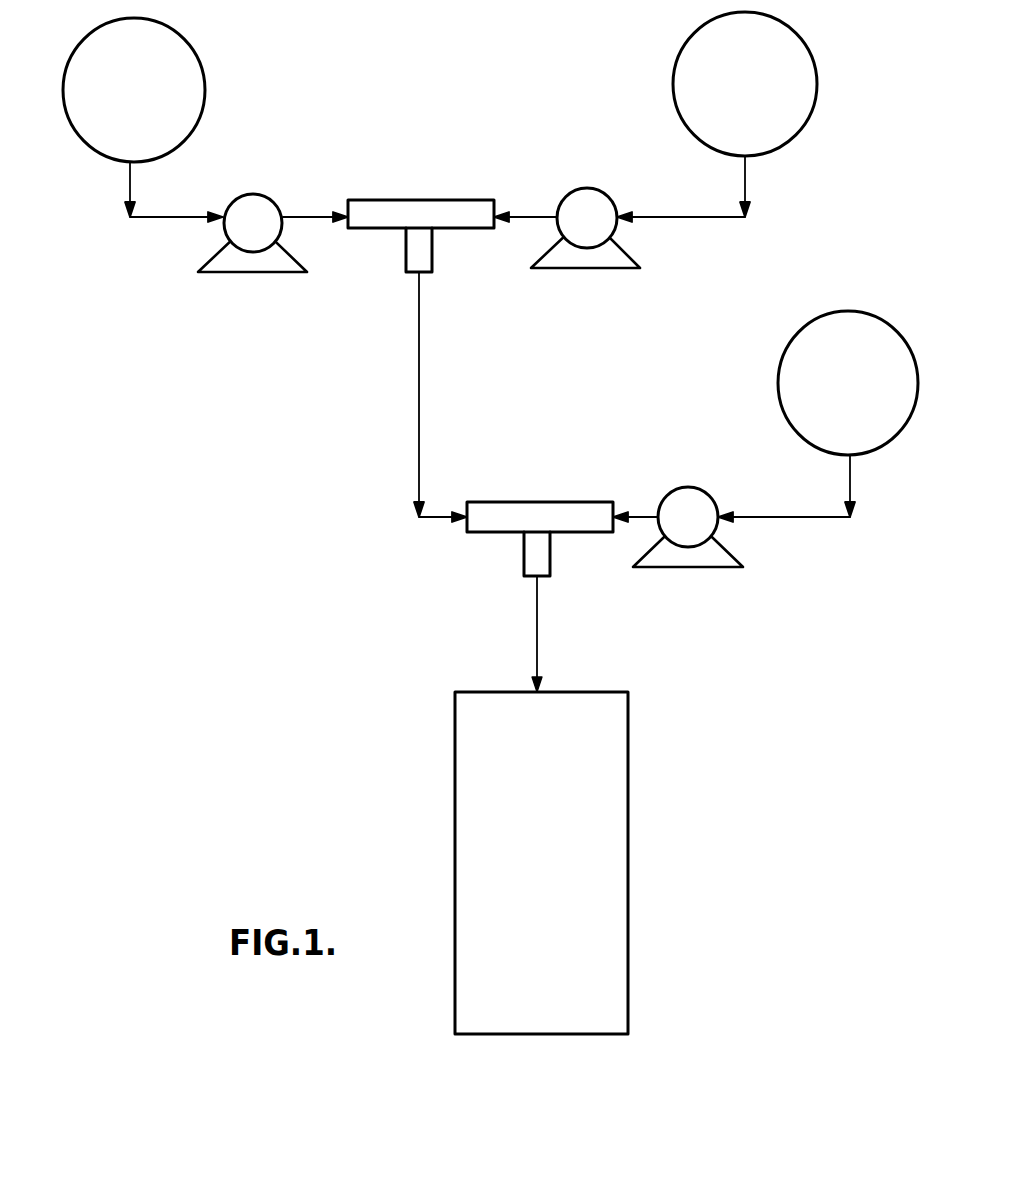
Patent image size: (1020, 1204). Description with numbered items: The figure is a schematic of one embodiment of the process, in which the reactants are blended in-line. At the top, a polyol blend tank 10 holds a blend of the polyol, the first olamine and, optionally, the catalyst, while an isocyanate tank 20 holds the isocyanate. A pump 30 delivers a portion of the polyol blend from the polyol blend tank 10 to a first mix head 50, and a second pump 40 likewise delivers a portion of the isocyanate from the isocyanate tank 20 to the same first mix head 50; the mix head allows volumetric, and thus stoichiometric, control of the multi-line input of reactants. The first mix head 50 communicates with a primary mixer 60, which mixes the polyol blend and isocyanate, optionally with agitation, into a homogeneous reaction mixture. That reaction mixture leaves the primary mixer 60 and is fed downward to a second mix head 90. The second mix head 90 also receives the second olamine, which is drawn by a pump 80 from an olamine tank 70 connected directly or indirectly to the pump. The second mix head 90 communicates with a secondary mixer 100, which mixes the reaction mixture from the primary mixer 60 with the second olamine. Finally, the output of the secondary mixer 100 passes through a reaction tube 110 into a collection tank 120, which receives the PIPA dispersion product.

The polyol blend tank 10 is at (198, 72).
The isocyanate tank 20 is at (672, 80).
The pump 30 is at (258, 195).
The pump 40 is at (590, 191).
The first mix head 50 is at (385, 200).
The primary mixer 60 is at (406, 245).
The olamine tank 70 is at (778, 366).
The pump 80 is at (682, 491).
The second mix head 90 is at (517, 502).
The secondary mixer 100 is at (524, 555).
The reaction tube 110 is at (538, 642).
The collection tank 120 is at (628, 835).